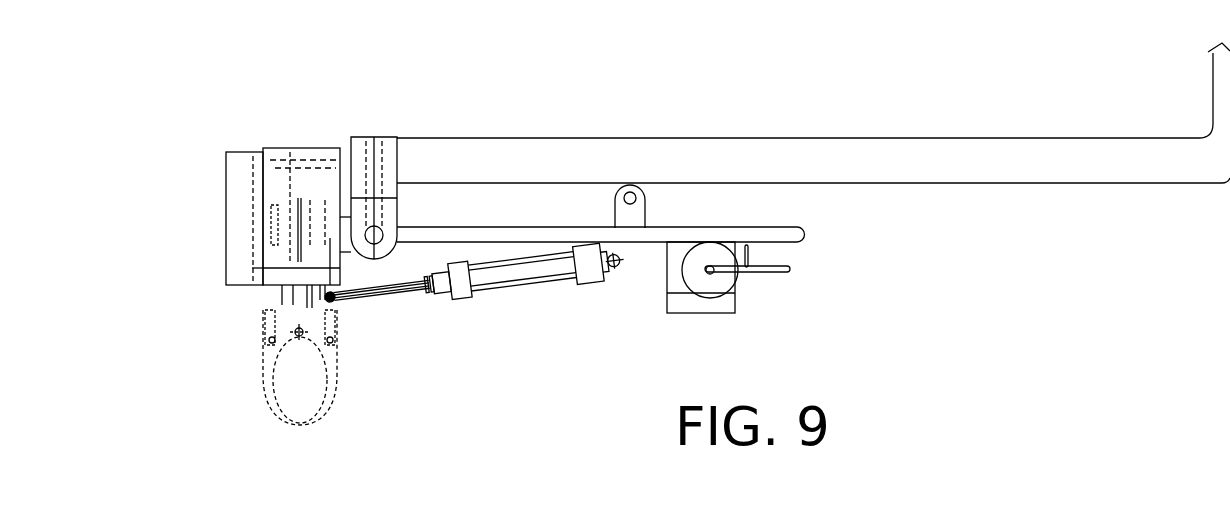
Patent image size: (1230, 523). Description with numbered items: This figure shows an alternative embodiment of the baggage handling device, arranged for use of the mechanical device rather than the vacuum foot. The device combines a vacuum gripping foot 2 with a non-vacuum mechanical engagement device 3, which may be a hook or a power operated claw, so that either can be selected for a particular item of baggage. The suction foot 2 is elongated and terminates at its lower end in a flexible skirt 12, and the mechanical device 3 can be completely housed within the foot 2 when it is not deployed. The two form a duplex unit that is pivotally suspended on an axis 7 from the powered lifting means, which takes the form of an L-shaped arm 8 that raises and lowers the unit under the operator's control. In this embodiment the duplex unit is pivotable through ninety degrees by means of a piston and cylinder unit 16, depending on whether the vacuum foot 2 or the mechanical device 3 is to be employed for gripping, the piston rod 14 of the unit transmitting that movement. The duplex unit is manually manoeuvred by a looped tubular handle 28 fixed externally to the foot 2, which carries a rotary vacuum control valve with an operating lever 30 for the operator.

The vacuum gripping foot 2 is at (314, 147).
The mechanical engagement device 3 is at (338, 403).
The axis 7 is at (385, 220).
The L-shaped arm 8 is at (828, 146).
The flexible skirt 12 is at (245, 152).
The piston rod 14 is at (398, 298).
The piston and cylinder unit 16 is at (538, 293).
The looped tubular handle 28 is at (780, 223).
The operating lever 30 is at (788, 277).